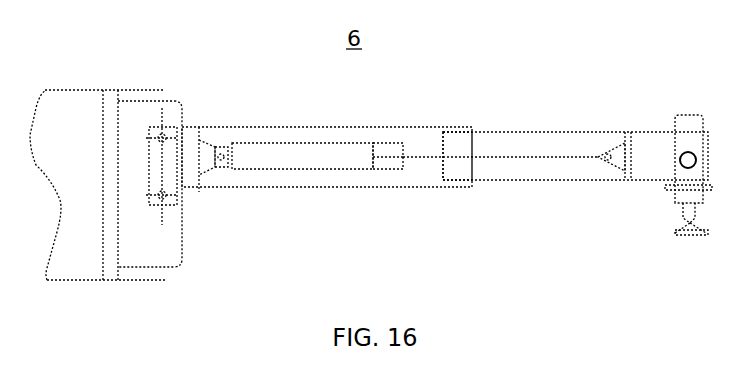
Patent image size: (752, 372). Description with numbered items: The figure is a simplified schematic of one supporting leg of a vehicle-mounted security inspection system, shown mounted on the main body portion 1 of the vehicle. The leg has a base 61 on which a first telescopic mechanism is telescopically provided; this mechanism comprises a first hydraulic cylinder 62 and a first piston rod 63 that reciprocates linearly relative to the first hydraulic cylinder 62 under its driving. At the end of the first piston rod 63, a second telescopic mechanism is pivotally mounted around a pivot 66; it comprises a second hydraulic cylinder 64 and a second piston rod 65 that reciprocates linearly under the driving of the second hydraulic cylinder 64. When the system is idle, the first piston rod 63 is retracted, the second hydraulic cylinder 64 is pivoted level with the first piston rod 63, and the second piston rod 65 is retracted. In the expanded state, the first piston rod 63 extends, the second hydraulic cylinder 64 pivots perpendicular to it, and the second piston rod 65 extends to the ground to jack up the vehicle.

The main body portion 1 is at (140, 120).
The base 61 is at (313, 140).
The first hydraulic cylinder 62 is at (277, 157).
The first piston rod 63 is at (523, 172).
The second hydraulic cylinder 64 is at (693, 140).
The second piston rod 65 is at (676, 231).
The pivot 66 is at (677, 165).